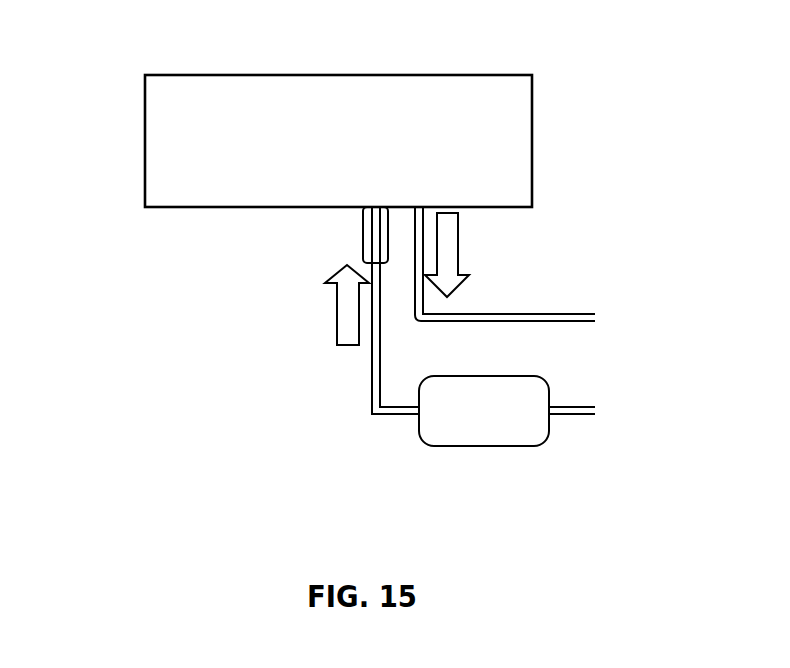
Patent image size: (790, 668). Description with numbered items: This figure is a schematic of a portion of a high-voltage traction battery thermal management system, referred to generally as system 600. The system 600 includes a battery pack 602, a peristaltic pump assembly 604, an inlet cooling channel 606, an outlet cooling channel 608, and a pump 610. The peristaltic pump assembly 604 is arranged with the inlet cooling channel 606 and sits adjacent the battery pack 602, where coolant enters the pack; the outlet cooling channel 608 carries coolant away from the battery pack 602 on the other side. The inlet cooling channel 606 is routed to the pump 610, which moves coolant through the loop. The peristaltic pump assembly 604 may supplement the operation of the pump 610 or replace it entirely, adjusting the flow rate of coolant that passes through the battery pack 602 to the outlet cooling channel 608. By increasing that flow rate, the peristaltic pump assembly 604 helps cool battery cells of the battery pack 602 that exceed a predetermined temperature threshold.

The system 600 is at (176, 45).
The battery pack 602 is at (298, 92).
The peristaltic pump assembly 604 is at (363, 233).
The inlet cooling channel 606 is at (372, 377).
The outlet cooling channel 608 is at (506, 313).
The pump 610 is at (435, 447).